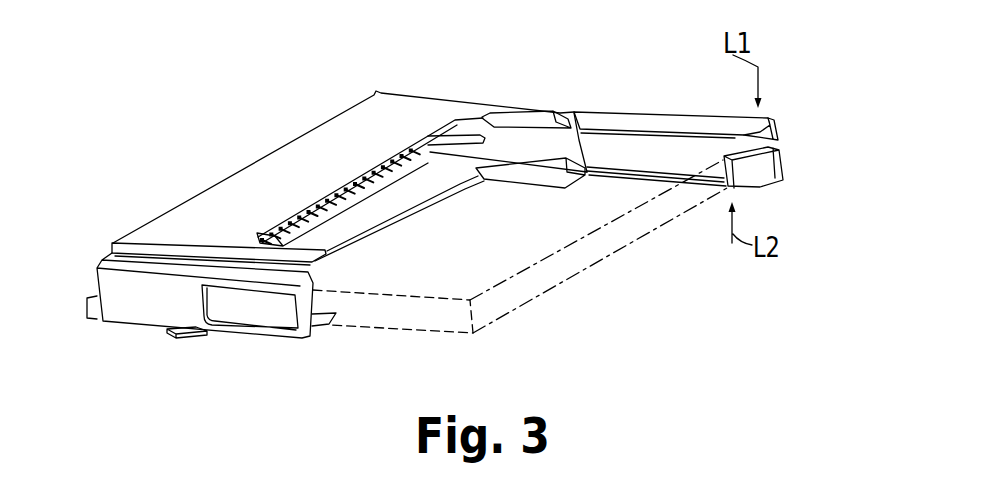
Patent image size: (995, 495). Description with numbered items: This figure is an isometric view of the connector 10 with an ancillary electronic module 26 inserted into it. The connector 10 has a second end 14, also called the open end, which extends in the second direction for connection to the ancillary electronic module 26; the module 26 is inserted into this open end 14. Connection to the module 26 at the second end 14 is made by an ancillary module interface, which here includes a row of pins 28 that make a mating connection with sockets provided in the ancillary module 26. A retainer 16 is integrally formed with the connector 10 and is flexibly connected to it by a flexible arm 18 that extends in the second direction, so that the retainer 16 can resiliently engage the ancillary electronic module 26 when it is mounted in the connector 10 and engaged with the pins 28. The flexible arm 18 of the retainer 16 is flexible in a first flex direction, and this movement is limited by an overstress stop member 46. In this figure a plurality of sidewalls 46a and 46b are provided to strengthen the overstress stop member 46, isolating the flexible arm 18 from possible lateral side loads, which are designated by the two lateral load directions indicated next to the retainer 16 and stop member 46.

The connector 10 is at (461, 188).
The second end 14 is at (320, 342).
The retainer 16 is at (774, 189).
The flexible arm 18 is at (663, 155).
The ancillary electronic module 26 is at (607, 271).
The pins 28 is at (354, 181).
The overstress stop member 46 is at (775, 127).
The sidewall 46a is at (615, 128).
The sidewall 46b is at (613, 175).